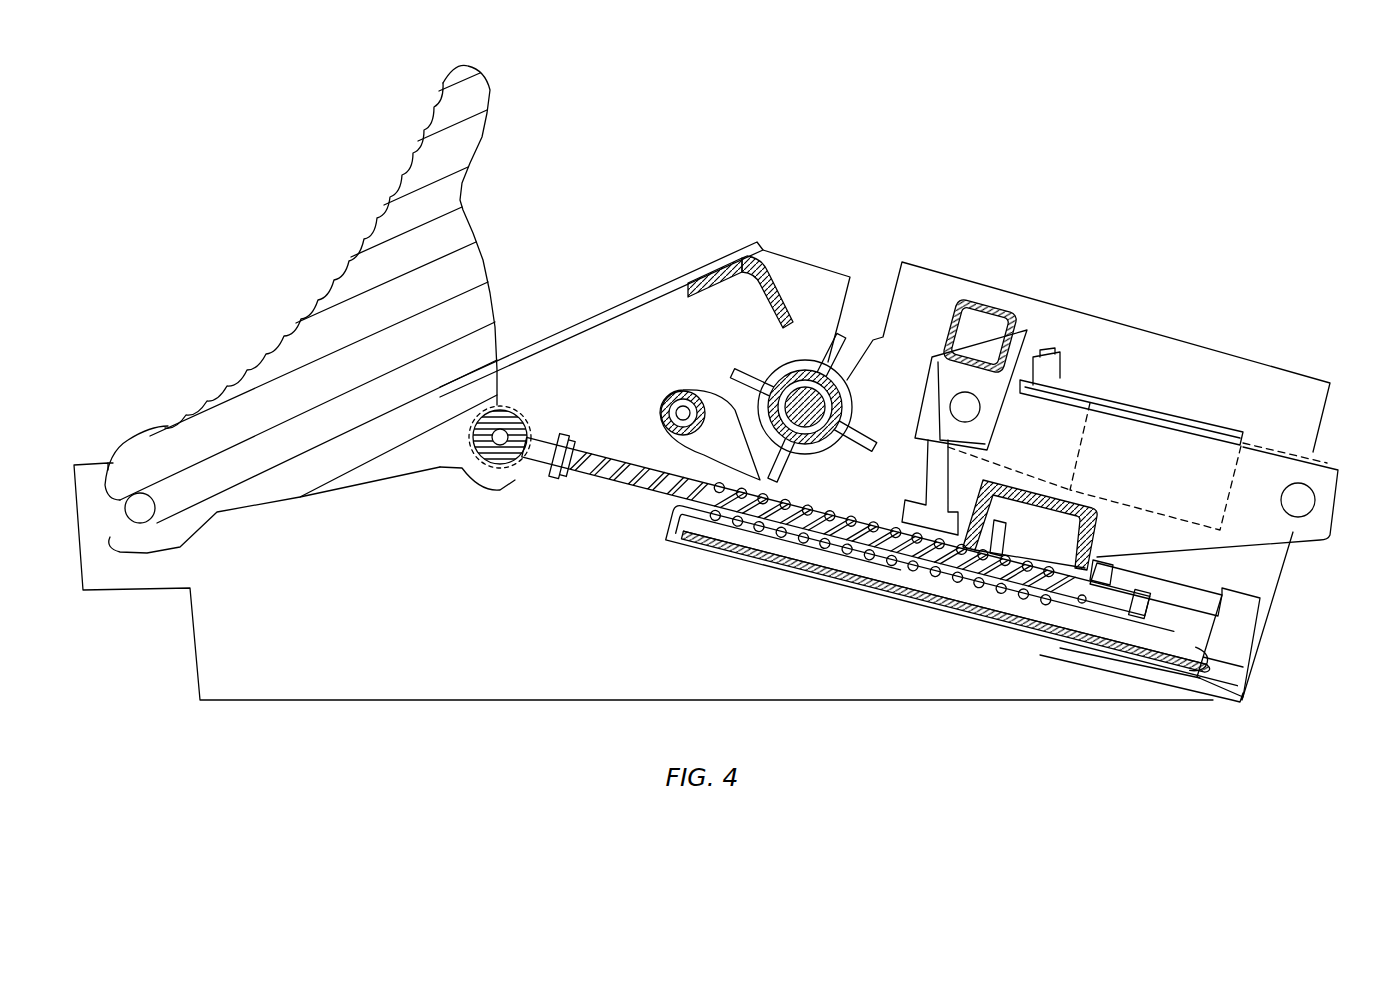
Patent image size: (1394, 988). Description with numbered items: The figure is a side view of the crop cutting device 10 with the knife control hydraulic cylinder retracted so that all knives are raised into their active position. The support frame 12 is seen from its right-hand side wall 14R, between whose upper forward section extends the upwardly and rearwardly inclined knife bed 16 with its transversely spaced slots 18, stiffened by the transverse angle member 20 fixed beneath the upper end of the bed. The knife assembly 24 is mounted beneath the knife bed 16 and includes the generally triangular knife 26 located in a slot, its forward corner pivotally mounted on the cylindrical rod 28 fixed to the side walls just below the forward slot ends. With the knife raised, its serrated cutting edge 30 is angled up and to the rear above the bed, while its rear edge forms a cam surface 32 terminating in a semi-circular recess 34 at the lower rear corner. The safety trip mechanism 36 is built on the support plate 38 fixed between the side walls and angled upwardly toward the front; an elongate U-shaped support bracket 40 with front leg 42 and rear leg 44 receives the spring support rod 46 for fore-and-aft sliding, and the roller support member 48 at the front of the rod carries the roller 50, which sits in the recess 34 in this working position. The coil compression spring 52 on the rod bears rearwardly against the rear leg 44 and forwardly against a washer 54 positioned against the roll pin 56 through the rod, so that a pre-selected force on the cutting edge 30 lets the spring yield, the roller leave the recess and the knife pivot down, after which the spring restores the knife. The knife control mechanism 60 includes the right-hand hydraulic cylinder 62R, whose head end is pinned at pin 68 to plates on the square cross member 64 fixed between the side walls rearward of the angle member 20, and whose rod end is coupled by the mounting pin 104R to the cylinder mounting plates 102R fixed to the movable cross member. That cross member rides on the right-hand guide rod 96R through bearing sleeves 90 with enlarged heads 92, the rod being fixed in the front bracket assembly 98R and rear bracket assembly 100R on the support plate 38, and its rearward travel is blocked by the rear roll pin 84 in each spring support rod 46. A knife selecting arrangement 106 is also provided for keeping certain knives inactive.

The crop cutting device 10 is at (604, 198).
The support frame 12 is at (433, 705).
The right-hand side wall 14R is at (503, 626).
The knife bed 16 is at (700, 285).
The slots 18 is at (600, 322).
The angle member 20 is at (770, 290).
The knife assembly 24 is at (326, 546).
The knife 26 is at (313, 446).
The cylindrical rod 28 is at (142, 510).
The serrated cutting edge 30 is at (305, 318).
The cam surface 32 is at (492, 262).
The semi-circular recess 34 is at (510, 415).
The safety trip mechanism 36 is at (880, 617).
The support plate 38 is at (940, 617).
The U-shaped support bracket 40 is at (815, 582).
The front leg 42 is at (692, 500).
The rear leg 44 is at (1060, 636).
The spring support rod 46 is at (1142, 611).
The roller support member 48 is at (563, 464).
The roller 50 is at (525, 480).
The coil compression spring 52 is at (808, 492).
The washer 54 is at (706, 475).
The roll pin 56 is at (662, 476).
The knife control mechanism 60 is at (1370, 460).
The right-hand hydraulic cylinder 62R is at (1193, 415).
The cross member 64 is at (995, 300).
The pin 68 is at (958, 405).
The rear roll pin 84 is at (1085, 604).
The bearing sleeve 90 is at (1098, 545).
The enlarged head 92 is at (1006, 521).
The right-hand guide rod 96R is at (1224, 592).
The front bracket assembly 98R is at (932, 505).
The rear bracket assembly 100R is at (1256, 620).
The cylinder mounting plates 102R is at (1262, 468).
The mounting pin 104R is at (1298, 518).
The knife selecting arrangement 106 is at (876, 290).